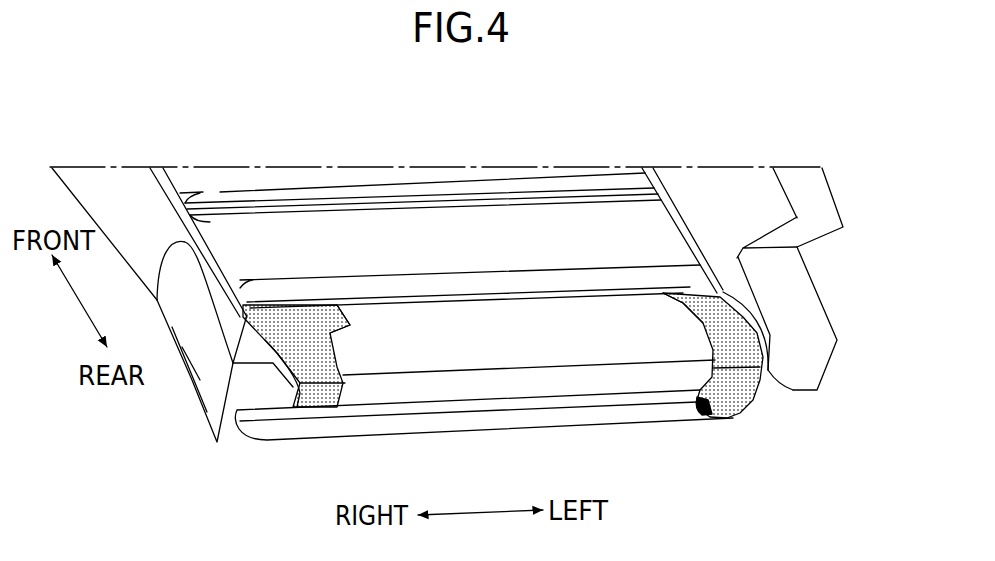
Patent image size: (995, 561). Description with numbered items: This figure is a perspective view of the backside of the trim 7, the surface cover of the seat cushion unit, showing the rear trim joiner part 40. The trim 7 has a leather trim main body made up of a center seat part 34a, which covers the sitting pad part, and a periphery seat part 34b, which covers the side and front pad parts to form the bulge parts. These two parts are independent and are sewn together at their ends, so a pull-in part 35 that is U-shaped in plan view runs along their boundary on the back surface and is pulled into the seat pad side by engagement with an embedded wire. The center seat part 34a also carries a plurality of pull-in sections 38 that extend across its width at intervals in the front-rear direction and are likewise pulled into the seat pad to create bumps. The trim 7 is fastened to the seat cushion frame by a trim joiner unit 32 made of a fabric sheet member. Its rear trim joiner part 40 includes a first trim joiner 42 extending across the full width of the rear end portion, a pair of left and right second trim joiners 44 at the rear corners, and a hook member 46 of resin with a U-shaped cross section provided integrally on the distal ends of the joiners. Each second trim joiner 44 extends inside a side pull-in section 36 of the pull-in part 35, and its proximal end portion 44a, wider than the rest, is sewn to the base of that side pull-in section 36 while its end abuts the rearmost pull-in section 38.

The trim 7 is at (433, 166).
The trim joiner unit 32 is at (545, 413).
The center seat part 34a is at (558, 236).
The periphery seat part 34b is at (147, 195).
The pull-in part 35 is at (487, 306).
The side pull-in section 36 is at (707, 274).
The pull-in section 38 is at (372, 290).
The rear trim joiner part 40 is at (545, 413).
The first trim joiner 42 is at (765, 408).
The second trim joiner 44 is at (317, 395).
The proximal end portion 44a is at (343, 325).
The hook member 46 is at (705, 443).